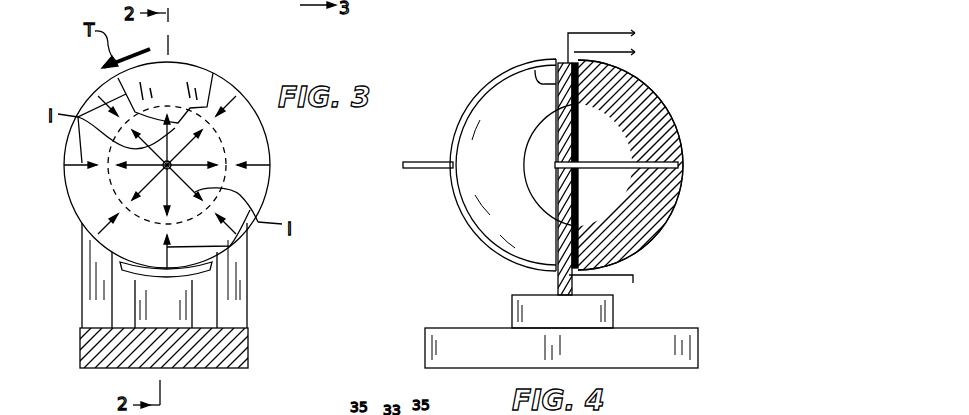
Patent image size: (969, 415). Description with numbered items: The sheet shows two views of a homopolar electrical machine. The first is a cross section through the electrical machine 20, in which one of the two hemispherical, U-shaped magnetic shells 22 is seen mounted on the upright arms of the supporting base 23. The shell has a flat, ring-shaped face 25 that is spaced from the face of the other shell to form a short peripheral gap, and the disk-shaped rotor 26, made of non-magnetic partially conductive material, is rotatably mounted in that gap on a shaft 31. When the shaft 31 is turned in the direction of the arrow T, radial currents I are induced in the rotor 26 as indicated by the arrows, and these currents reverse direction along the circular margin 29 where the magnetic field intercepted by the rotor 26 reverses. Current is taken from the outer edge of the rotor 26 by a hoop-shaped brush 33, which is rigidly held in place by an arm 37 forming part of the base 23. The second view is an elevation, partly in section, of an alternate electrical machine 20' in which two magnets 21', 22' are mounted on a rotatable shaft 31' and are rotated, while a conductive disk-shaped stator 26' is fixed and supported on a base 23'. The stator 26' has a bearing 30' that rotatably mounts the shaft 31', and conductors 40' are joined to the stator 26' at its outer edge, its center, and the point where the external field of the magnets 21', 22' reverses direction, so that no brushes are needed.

In FIG. 3, the electrical machine 20 is at (193, 165).
In FIG. 3, the magnetic shell 22 is at (168, 135).
In FIG. 3, the supporting base 23 is at (173, 275).
In FIG. 3, the ring-shaped face 25 is at (207, 85).
In FIG. 3, the rotor 26 is at (191, 182).
In FIG. 3, the circular margin 29 is at (262, 120).
In FIG. 3, the shaft 31 is at (143, 175).
In FIG. 3, the brush 33 is at (128, 280).
In FIG. 3, the arm 37 is at (178, 320).
In FIG. 4, the electrical machine 20' is at (620, 165).
In FIG. 4, the magnet 21' is at (485, 165).
In FIG. 4, the magnet 22' is at (649, 165).
In FIG. 4, the base 23' is at (561, 329).
In FIG. 4, the stator 26' is at (565, 166).
In FIG. 4, the bearing 30' is at (616, 151).
In FIG. 4, the shaft 31' is at (415, 150).
In FIG. 4, the conductors 40' is at (619, 152).